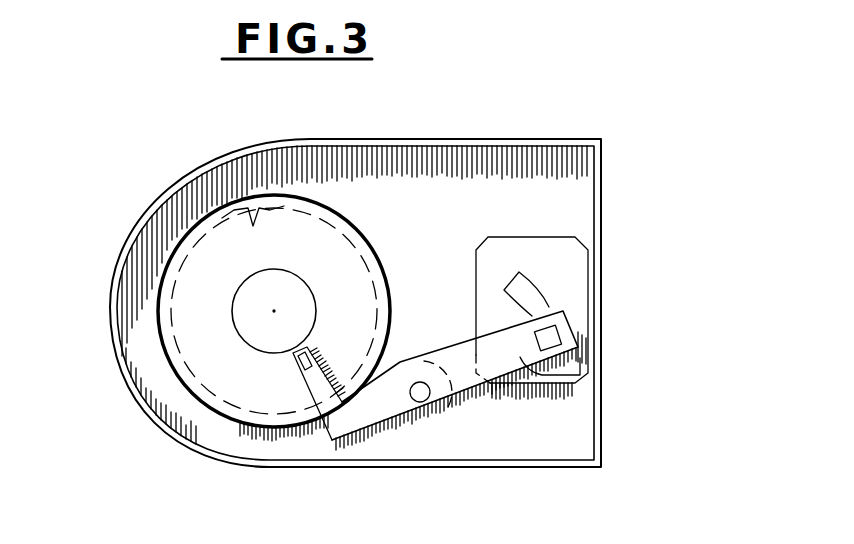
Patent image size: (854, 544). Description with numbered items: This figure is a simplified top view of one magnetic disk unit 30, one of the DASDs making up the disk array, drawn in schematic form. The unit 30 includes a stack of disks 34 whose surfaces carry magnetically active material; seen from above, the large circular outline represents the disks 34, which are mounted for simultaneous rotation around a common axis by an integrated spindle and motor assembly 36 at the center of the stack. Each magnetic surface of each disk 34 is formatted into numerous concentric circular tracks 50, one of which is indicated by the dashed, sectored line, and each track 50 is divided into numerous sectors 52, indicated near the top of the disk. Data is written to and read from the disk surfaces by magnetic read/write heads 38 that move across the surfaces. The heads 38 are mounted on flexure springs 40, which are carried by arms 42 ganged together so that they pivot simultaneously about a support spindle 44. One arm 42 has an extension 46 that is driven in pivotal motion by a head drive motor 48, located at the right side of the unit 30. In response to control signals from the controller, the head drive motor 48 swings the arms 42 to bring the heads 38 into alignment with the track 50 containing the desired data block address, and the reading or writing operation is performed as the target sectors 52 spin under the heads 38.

The magnetic disk unit 30 is at (506, 114).
The disks 34 is at (185, 243).
The integrated spindle and motor assembly 36 is at (242, 338).
The magnetic read/write heads 38 is at (298, 368).
The flexure springs 40 is at (302, 408).
The arms 42 is at (372, 414).
The support spindle 44 is at (420, 402).
The extension 46 is at (573, 373).
The head drive motor 48 is at (573, 278).
The concentric circular tracks 50 is at (362, 241).
The sectors 52 is at (254, 212).